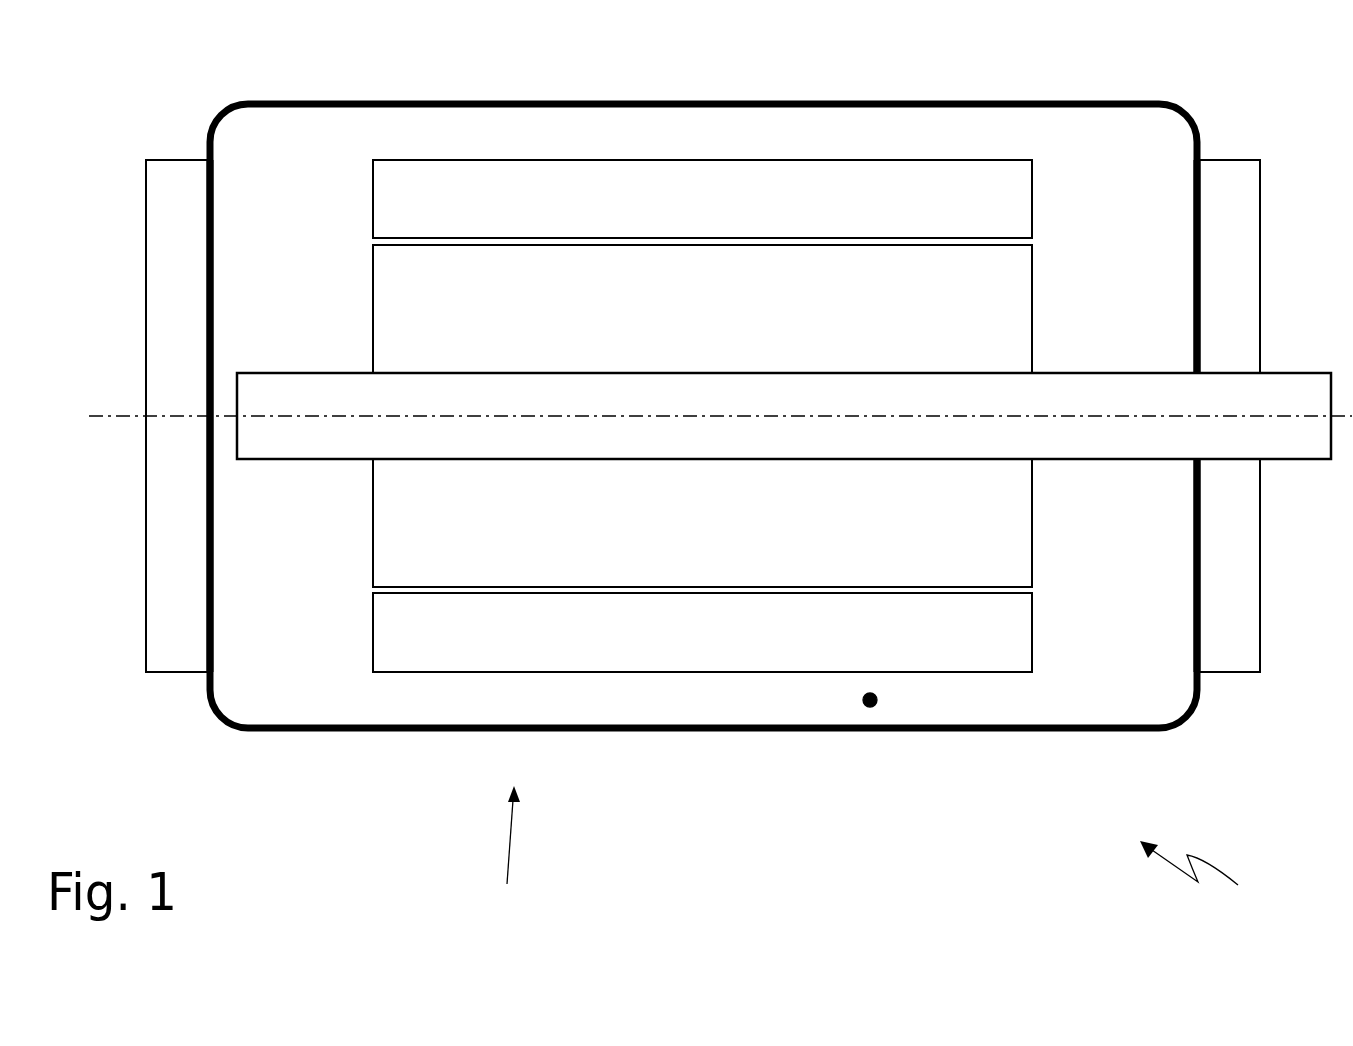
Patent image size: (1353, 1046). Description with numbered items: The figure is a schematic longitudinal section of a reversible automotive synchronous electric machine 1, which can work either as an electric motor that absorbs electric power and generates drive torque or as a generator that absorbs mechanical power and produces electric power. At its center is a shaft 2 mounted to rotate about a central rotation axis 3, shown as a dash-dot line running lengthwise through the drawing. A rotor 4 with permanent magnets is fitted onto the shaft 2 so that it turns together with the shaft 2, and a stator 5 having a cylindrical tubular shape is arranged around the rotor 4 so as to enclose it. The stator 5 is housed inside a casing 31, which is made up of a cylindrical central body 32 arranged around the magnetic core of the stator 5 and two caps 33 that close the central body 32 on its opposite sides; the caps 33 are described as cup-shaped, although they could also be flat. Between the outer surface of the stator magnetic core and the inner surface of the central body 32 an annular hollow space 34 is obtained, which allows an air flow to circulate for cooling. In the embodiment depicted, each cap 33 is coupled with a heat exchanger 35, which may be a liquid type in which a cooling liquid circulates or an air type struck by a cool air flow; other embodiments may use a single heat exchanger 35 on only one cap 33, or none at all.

The electric machine 1 is at (1198, 875).
The shaft 2 is at (1302, 400).
The central rotation axis 3 is at (107, 413).
The rotor 4 is at (884, 305).
The stator 5 is at (698, 190).
The casing 31 is at (504, 852).
The central body 32 is at (522, 101).
The cap 33 is at (208, 566).
The annular hollow space 34 is at (870, 707).
The heat exchanger 35 is at (175, 246).